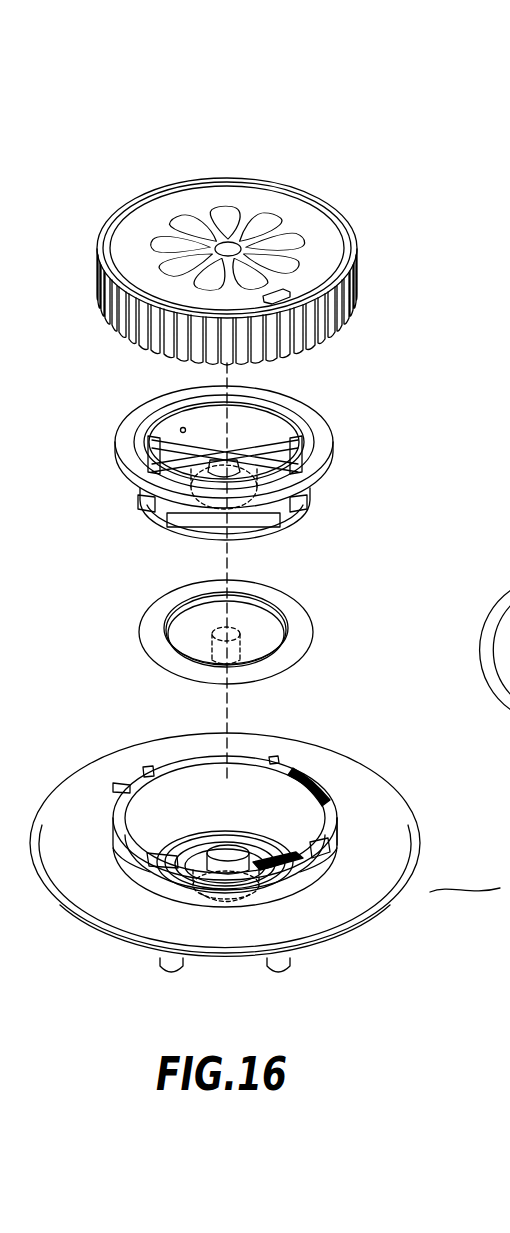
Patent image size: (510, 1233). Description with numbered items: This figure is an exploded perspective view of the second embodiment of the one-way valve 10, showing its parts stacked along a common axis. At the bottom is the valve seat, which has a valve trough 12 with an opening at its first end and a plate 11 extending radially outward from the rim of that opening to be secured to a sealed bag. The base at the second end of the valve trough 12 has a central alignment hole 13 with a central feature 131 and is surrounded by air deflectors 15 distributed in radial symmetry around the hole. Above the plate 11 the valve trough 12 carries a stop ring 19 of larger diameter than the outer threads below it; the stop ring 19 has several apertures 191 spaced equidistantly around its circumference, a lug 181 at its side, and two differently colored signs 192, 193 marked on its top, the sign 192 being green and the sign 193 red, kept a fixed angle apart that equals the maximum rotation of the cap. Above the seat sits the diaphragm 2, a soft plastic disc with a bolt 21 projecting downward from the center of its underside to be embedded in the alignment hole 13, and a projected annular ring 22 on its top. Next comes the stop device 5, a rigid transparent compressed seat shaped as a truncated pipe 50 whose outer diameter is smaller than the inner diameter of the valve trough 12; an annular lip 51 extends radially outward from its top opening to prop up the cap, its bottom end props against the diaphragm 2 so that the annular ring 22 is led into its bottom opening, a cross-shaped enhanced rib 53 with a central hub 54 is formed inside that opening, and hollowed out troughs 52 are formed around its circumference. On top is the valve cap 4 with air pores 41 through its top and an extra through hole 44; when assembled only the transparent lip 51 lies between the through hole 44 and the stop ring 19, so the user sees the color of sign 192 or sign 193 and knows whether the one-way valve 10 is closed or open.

The one-way valve 10 is at (172, 87).
The valve cap 4 is at (272, 200).
The air pores 41 is at (229, 210).
The through hole 44 is at (288, 296).
The stop device 5 is at (123, 433).
The annular lip 51 is at (318, 434).
The hollowed out troughs 52 is at (183, 428).
The enhanced rib 53 is at (250, 460).
The central hub 54 is at (308, 456).
The truncated pipe 50 is at (300, 510).
The diaphragm 2 is at (298, 610).
The projected annular ring 22 is at (150, 607).
The bolt 21 is at (212, 636).
The plate 11 is at (400, 843).
The valve trough 12 is at (172, 778).
The central alignment hole 13 is at (237, 860).
The cavity bottom 131 is at (212, 852).
The air deflectors 15 is at (295, 976).
The stop ring 19 is at (338, 814).
The lug 181 is at (322, 864).
The apertures 191 is at (278, 758).
The sign 192 is at (286, 868).
The sign 193 is at (320, 780).